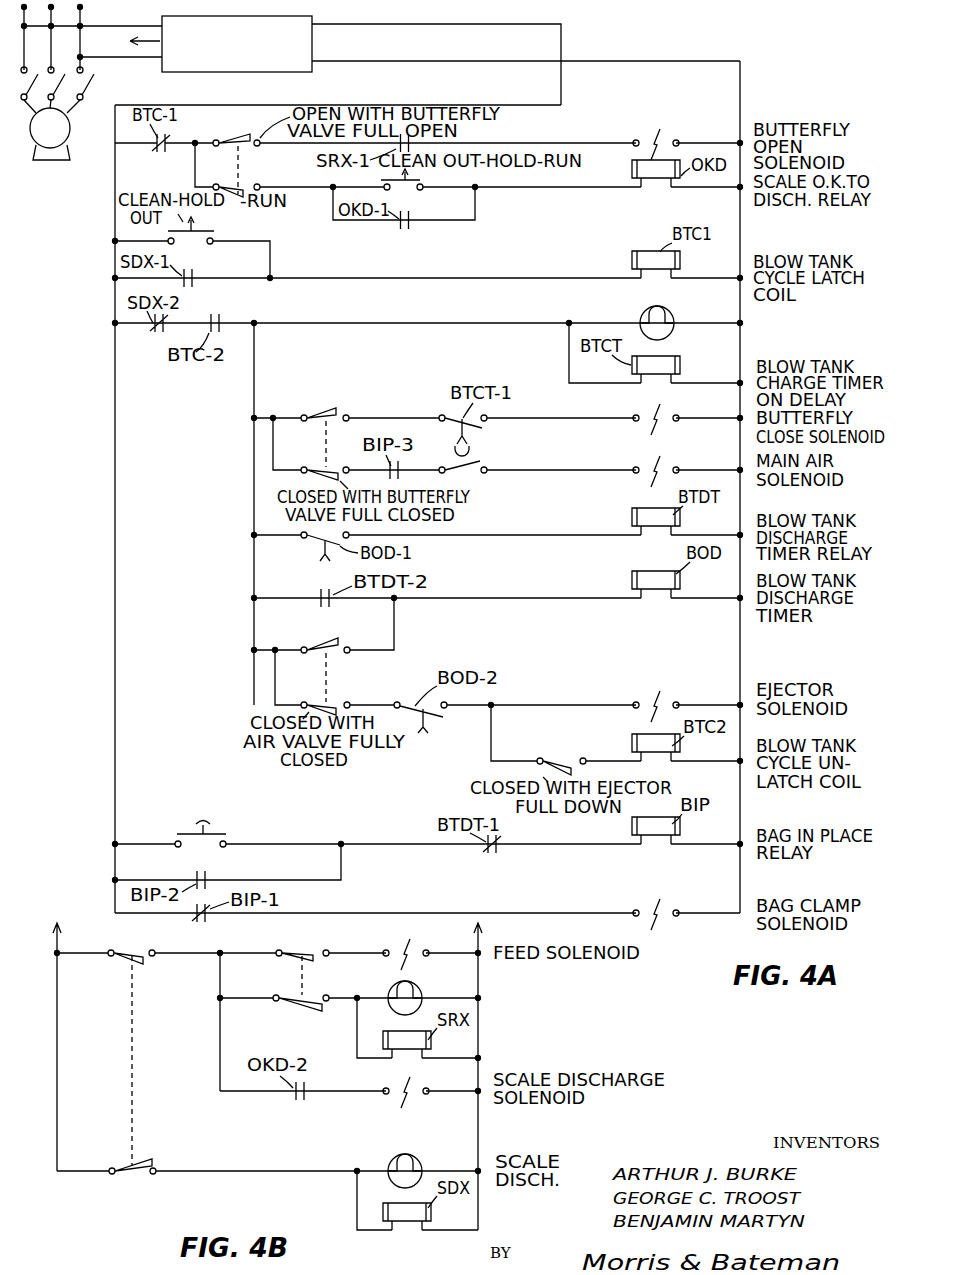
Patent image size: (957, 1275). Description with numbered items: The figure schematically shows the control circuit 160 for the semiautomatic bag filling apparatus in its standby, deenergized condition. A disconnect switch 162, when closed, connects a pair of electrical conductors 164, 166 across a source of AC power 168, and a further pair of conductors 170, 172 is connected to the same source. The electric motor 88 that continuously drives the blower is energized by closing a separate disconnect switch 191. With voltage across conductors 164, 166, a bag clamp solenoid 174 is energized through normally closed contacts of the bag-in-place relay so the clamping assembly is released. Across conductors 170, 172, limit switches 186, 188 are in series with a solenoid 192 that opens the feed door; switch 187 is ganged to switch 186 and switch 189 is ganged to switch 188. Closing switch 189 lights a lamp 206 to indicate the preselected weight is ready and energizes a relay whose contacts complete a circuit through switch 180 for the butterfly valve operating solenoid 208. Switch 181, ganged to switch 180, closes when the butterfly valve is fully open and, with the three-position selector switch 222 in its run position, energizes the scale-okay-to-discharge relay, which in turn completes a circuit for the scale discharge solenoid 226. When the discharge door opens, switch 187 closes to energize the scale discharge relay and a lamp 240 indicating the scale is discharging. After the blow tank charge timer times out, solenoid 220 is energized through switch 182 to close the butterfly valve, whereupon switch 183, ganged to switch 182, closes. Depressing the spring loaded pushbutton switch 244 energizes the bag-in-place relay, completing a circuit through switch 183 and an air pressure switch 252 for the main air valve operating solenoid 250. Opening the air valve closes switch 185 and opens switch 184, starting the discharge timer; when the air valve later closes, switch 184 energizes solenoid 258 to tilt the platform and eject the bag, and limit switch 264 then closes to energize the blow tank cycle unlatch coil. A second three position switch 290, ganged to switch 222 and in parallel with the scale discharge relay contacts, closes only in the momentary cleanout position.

In FIG. 4A, the electric motor 88 is at (70, 128).
In FIG. 4A, the control circuit 160 is at (84, 222).
In FIG. 4A, the disconnect switch 162 is at (212, 17).
In FIG. 4A, the electrical conductor 164 is at (115, 175).
In FIG. 4A, the electrical conductor 166 is at (740, 88).
In FIG. 4A, the source of AC power 168 is at (80, 14).
In FIG. 4A, the electrical conductor 170 is at (312, 61).
In FIG. 4B, the electrical conductor 170 is at (58, 946).
In FIG. 4A, the electrical conductor 172 is at (312, 24).
In FIG. 4B, the electrical conductor 172 is at (479, 941).
In FIG. 4A, the bag clamp solenoid 174 is at (660, 909).
In FIG. 4A, the limit switch 180 is at (255, 127).
In FIG. 4A, the limit switch 181 is at (246, 186).
In FIG. 4A, the limit switch 182 is at (345, 401).
In FIG. 4A, the limit switch 183 is at (320, 469).
In FIG. 4A, the limit switch 184 is at (336, 703).
In FIG. 4A, the limit switch 185 is at (336, 640).
In FIG. 4B, the limit switch 186 is at (126, 960).
In FIG. 4B, the limit switch 187 is at (125, 1177).
In FIG. 4B, the limit switch 188 is at (300, 950).
In FIG. 4B, the limit switch 189 is at (299, 1005).
In FIG. 4A, the disconnect switch 191 is at (94, 86).
In FIG. 4B, the solenoid 192 is at (406, 951).
In FIG. 4B, the lamp 206 is at (419, 989).
In FIG. 4A, the butterfly valve operating solenoid 208 is at (660, 136).
In FIG. 4A, the solenoid 220 is at (660, 414).
In FIG. 4A, the three-position selector switch 222 is at (421, 184).
In FIG. 4B, the scale discharge solenoid 226 is at (412, 1090).
In FIG. 4B, the lamp 240 is at (424, 1168).
In FIG. 4A, the spring loaded pushbutton switch 244 is at (213, 834).
In FIG. 4A, the main air valve operating solenoid 250 is at (660, 466).
In FIG. 4A, the air pressure switch 252 is at (470, 452).
In FIG. 4A, the solenoid 258 is at (662, 700).
In FIG. 4A, the limit switch 264 is at (556, 763).
In FIG. 4A, the three position switch 290 is at (212, 230).